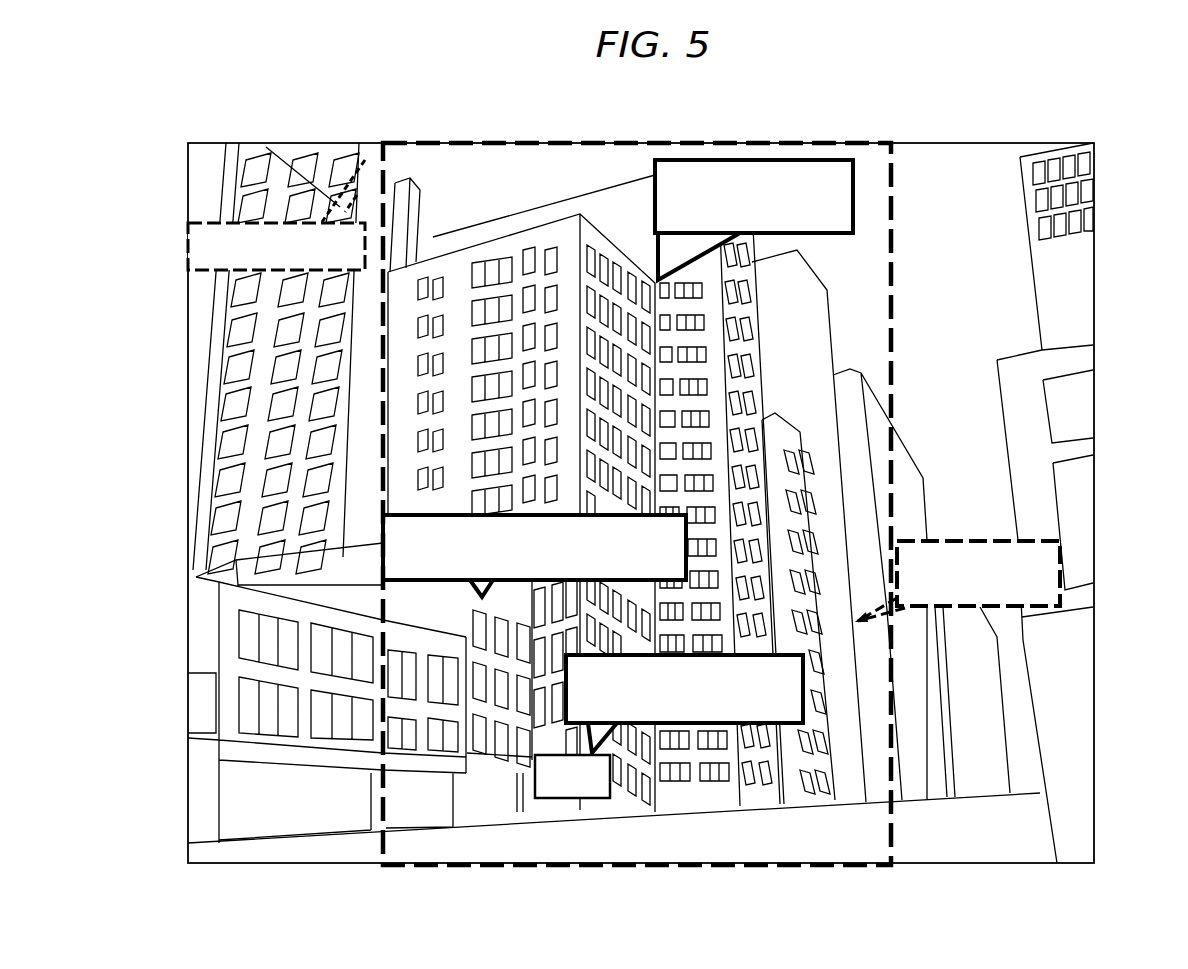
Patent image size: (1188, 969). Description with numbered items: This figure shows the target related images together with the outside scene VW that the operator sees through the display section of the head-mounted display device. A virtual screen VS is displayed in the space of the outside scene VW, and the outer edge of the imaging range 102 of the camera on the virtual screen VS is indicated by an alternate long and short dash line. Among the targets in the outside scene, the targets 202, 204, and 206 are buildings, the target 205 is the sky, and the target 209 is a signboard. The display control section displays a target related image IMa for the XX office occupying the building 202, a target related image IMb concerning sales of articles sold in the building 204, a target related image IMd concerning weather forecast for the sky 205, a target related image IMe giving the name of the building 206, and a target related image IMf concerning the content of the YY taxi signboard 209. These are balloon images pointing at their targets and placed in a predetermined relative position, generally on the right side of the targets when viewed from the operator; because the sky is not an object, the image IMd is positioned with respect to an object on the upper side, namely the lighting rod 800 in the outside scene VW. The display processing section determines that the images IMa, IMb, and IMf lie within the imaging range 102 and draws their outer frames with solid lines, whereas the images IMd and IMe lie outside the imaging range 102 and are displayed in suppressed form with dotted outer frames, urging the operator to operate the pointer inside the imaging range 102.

The target 205 is at (455, 170).
The target 202 is at (558, 232).
The lighting rod 800 is at (418, 212).
The target related image IMa is at (835, 158).
The outside scene VW is at (980, 173).
The virtual screen VS is at (1095, 265).
The target 206 is at (847, 372).
The target related image IMd is at (200, 220).
The target related image IMb is at (417, 512).
The target related image IMe is at (964, 540).
The imaging range 102 is at (380, 843).
The target 204 is at (490, 740).
The target 209 is at (607, 767).
The target related image IMf is at (787, 805).